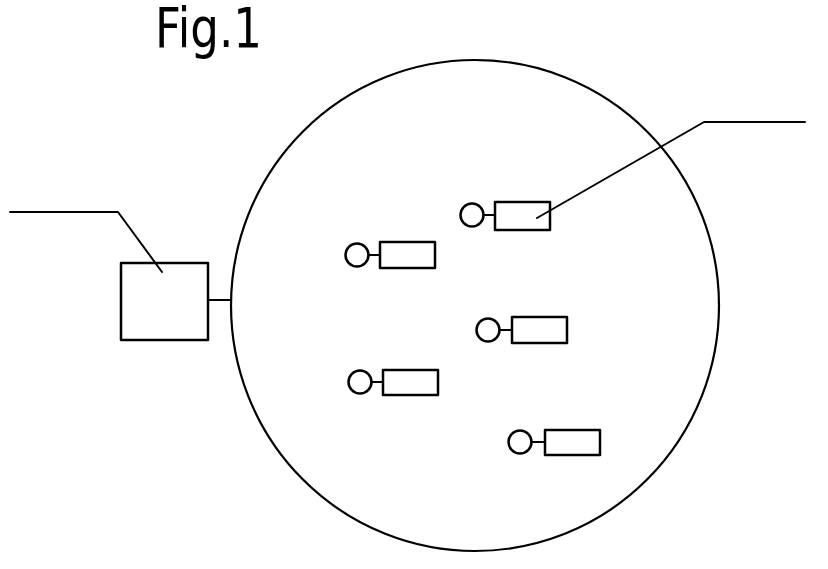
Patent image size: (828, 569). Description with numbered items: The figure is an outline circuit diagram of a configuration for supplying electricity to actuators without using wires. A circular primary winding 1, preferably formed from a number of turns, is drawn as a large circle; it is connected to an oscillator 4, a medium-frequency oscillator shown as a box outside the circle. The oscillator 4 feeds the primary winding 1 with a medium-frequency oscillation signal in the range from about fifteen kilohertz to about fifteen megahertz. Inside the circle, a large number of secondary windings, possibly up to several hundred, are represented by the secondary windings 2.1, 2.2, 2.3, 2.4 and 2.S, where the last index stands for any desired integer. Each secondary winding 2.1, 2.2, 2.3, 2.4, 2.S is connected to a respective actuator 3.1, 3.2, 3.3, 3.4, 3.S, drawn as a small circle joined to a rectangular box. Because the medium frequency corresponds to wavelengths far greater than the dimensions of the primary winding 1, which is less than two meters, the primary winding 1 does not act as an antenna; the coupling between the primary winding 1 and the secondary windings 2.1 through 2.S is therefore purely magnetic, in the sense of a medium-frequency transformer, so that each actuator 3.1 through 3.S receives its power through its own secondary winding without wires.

The primary winding 1 is at (243, 222).
The oscillator 4 is at (176, 330).
The secondary winding 2.1 is at (468, 207).
The actuator 3.1 is at (508, 212).
The secondary winding 2.2 is at (346, 250).
The actuator 3.2 is at (398, 255).
The secondary winding 2.3 is at (488, 323).
The actuator 3.3 is at (548, 325).
The sensor 2.4 is at (360, 380).
The actuator 3.4 is at (405, 377).
The secondary winding 2.S is at (520, 432).
The actuator 3.S is at (587, 437).